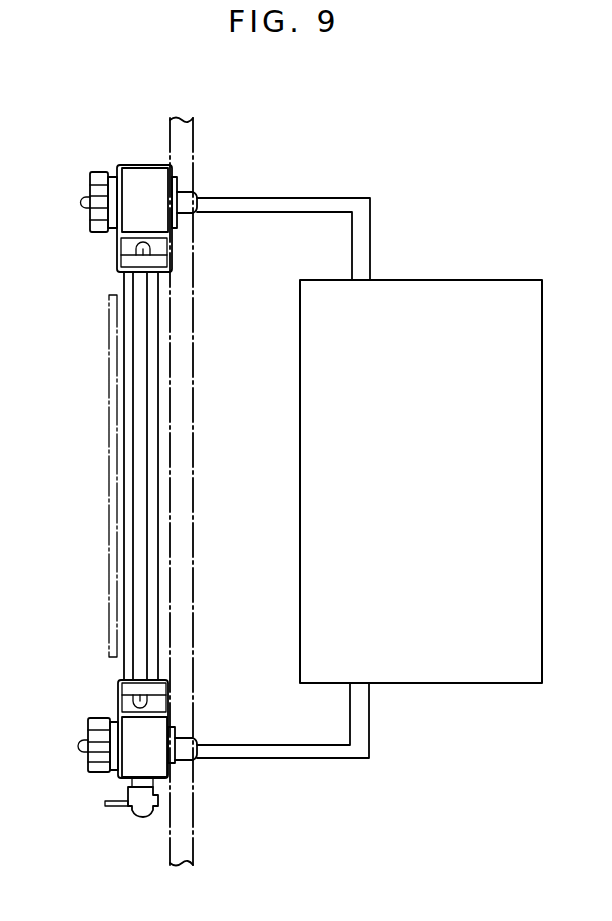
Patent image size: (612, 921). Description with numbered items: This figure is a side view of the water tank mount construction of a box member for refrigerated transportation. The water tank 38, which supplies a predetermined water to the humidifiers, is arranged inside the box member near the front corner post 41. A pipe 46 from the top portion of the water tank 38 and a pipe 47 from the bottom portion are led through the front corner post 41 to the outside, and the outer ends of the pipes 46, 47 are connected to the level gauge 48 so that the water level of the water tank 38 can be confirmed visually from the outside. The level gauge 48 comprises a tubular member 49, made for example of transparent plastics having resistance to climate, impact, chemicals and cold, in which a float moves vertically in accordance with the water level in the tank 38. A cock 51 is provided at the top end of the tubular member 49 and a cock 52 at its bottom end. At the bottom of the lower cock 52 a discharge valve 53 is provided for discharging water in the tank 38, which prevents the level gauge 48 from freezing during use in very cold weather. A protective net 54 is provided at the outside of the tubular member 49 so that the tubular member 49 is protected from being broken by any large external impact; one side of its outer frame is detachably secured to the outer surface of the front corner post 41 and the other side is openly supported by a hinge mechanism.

The water tank 38 is at (513, 285).
The front corner post 41 is at (195, 845).
The pipe 46 is at (338, 198).
The pipe 47 is at (352, 760).
The level gauge 48 is at (125, 393).
The tubular member 49 is at (122, 570).
The cock 51 is at (88, 212).
The cock 52 is at (90, 735).
The discharge valve 53 is at (137, 818).
The protective net 54 is at (110, 513).